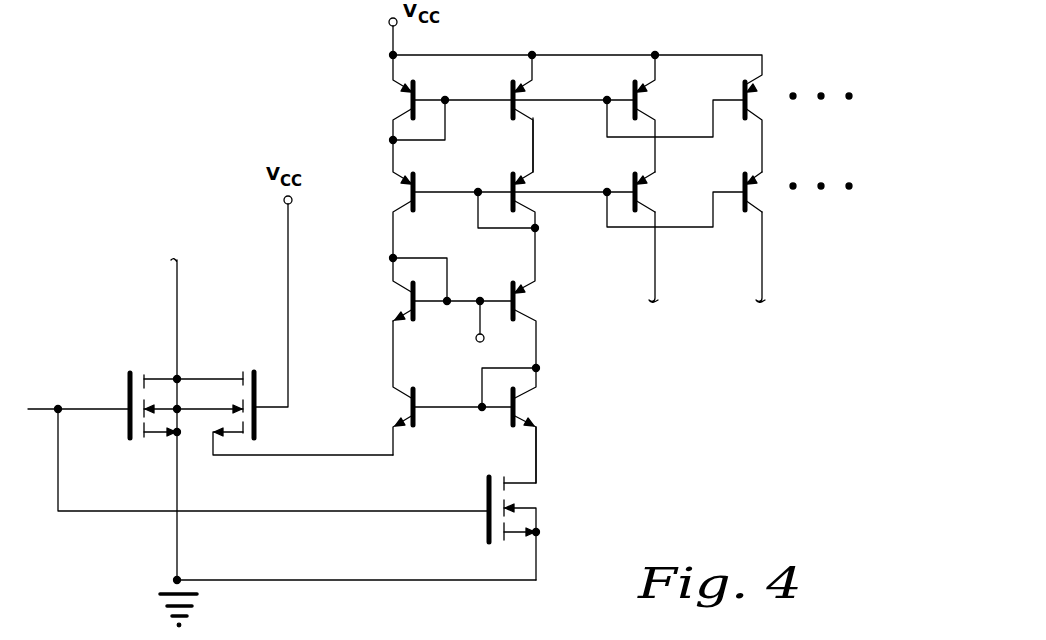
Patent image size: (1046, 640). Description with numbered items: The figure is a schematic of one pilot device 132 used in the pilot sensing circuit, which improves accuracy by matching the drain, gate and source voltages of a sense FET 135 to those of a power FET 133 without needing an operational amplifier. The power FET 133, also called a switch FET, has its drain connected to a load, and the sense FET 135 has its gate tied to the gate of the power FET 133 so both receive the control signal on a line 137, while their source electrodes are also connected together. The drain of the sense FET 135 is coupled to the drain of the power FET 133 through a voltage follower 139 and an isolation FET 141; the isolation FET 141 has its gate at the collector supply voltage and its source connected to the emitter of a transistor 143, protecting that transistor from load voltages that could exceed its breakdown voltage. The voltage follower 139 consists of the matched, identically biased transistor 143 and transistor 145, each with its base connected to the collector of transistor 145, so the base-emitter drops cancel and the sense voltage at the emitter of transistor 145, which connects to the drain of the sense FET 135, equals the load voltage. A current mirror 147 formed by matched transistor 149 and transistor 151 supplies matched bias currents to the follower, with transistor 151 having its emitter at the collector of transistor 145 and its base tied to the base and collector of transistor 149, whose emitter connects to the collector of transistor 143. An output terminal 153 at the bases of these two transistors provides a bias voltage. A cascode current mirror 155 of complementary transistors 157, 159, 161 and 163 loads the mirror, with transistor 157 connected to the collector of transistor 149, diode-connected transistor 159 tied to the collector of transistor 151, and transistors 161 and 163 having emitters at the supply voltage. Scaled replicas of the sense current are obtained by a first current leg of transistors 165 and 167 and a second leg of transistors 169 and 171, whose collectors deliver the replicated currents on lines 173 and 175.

The pilot device 132 is at (660, 408).
The power FET 133 is at (127, 422).
The sense FET 135 is at (486, 485).
The line 137 is at (64, 376).
The voltage follower 139 is at (455, 381).
The isolation FET 141 is at (262, 350).
The transistor 143 is at (406, 418).
The transistor 145 is at (512, 414).
The current mirror 147 is at (461, 240).
The transistor 149 is at (406, 320).
The transistor 151 is at (517, 288).
The output terminal 153 is at (505, 328).
The cascode current mirror 155 is at (497, 143).
The transistor 157 is at (420, 160).
The transistor 159 is at (512, 180).
The transistor 161 is at (416, 88).
The transistor 163 is at (511, 88).
The transistor 165 is at (634, 180).
The transistor 167 is at (634, 88).
The transistor 169 is at (744, 88).
The transistor 171 is at (743, 180).
The line 173 is at (690, 258).
The line 175 is at (797, 258).